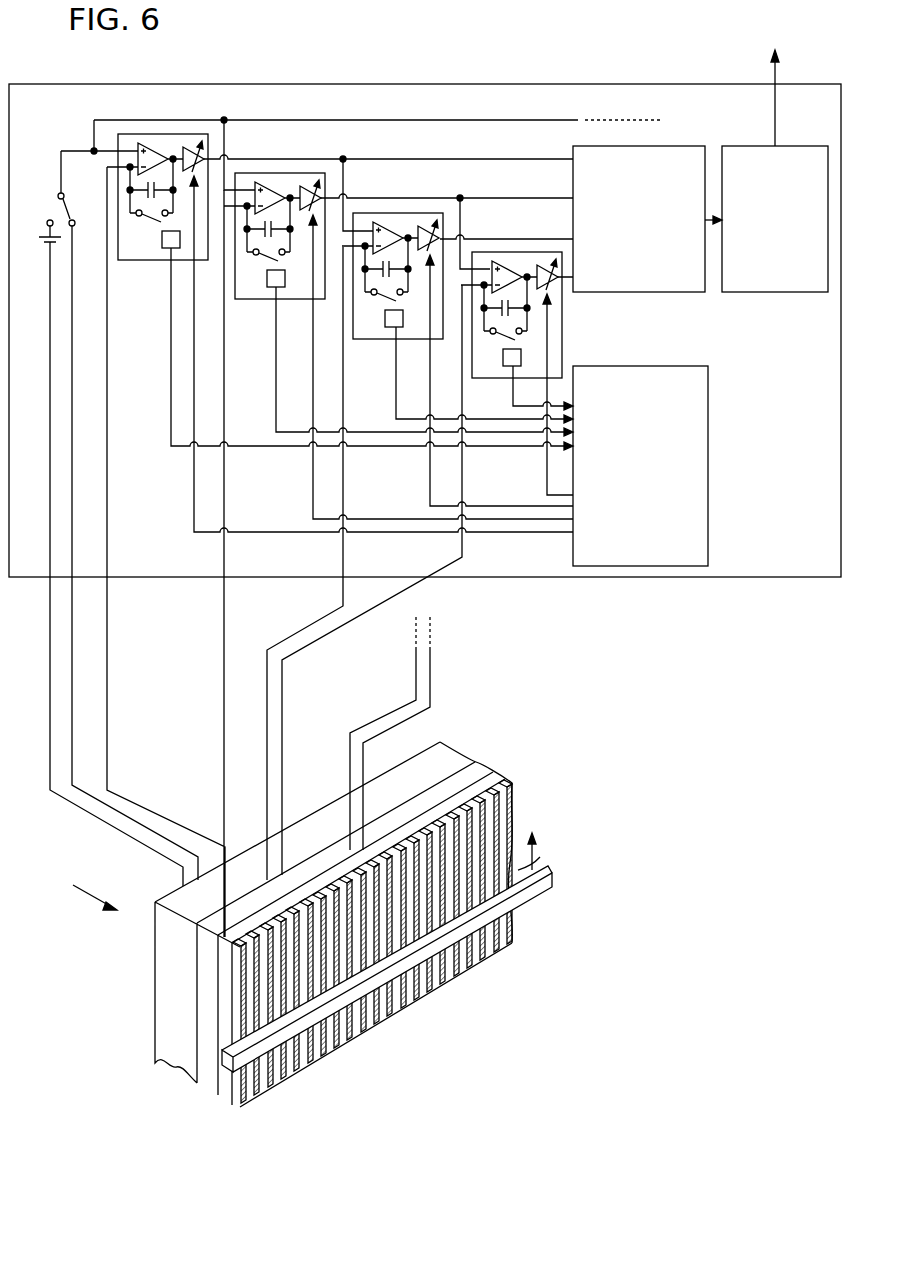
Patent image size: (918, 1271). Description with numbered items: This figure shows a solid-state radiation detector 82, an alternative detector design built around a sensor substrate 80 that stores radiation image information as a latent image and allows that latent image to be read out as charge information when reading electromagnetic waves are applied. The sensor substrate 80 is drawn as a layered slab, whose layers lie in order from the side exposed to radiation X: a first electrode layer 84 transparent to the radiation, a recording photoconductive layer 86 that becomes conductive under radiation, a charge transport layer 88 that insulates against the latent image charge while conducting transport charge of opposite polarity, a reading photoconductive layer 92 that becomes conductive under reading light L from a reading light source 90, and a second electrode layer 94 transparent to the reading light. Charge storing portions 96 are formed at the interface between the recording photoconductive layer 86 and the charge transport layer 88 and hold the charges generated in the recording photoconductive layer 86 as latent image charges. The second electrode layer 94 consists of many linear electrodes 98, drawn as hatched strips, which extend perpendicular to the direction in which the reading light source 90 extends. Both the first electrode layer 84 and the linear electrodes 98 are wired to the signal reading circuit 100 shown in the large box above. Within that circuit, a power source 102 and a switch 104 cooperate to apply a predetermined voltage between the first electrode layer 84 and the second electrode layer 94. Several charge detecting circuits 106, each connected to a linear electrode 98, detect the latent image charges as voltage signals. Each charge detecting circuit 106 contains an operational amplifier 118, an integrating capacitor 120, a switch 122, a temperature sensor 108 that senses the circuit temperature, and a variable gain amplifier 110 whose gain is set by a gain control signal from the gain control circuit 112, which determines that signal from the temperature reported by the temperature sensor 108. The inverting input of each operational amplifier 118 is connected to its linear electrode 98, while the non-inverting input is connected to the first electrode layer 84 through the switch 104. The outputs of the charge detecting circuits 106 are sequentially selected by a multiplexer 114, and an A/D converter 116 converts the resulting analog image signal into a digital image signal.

The sensor substrate 80 is at (346, 902).
The solid-state radiation detector 82 is at (538, 30).
The first electrode layer 84 is at (430, 740).
The recording photoconductive layer 86 is at (448, 765).
The charge transport layer 88 is at (480, 775).
The reading light source 90 is at (523, 893).
The reading photoconductive layer 92 is at (507, 782).
The second electrode layer 94 is at (512, 935).
The charge storing portions 96 is at (423, 787).
The linear electrodes 98 is at (483, 960).
The signal reading circuit 100 is at (588, 83).
The power source 102 is at (44, 239).
The switch 104 is at (53, 208).
The charge detecting circuit 106 is at (177, 133).
The temperature sensor 108 is at (167, 249).
The variable gain amplifier 110 is at (213, 153).
The gain control circuit 112 is at (583, 366).
The multiplexer 114 is at (687, 293).
The A/D converter 116 is at (810, 293).
The operational amplifier 118 is at (157, 145).
The integrating capacitor 120 is at (140, 198).
The switch 122 is at (147, 222).